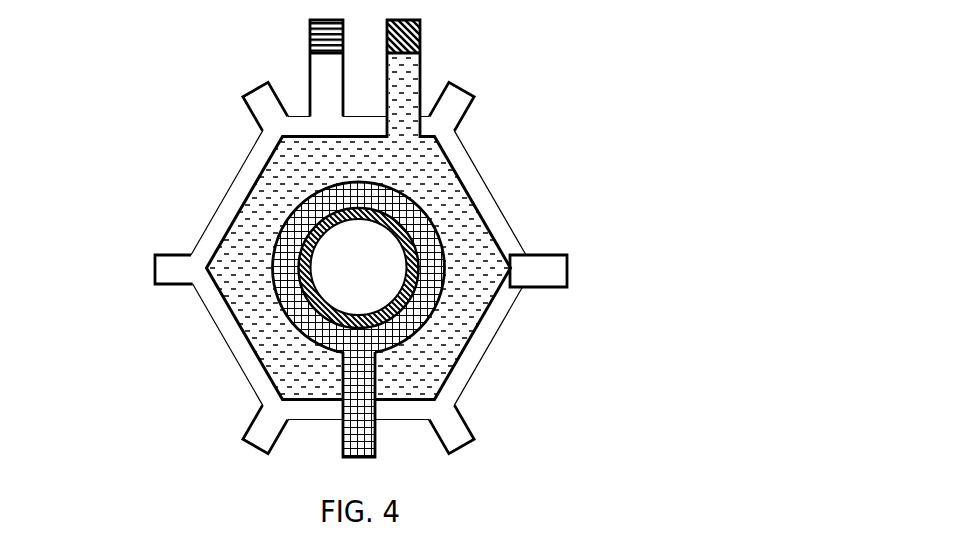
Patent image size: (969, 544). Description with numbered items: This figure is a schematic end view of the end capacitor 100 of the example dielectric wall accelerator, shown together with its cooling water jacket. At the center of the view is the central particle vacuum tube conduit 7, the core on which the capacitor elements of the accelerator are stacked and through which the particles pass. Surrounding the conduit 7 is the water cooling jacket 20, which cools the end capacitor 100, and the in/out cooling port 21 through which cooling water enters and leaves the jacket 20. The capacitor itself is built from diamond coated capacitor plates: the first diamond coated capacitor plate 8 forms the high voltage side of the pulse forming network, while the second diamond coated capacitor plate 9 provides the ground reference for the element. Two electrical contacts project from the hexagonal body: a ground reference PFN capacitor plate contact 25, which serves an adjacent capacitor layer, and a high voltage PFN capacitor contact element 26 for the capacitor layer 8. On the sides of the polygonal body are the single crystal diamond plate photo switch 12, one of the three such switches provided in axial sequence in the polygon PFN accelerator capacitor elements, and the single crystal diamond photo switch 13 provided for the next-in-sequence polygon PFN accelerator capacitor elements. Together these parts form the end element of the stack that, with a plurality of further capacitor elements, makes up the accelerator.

The end capacitor 100 is at (703, 63).
The second diamond coated capacitor plate 9 is at (227, 203).
The first diamond coated capacitor plate 8 is at (462, 322).
The central particle vacuum tube conduit 7 is at (413, 242).
The water cooling jacket 20 is at (377, 336).
The in/out cooling port 21 is at (340, 391).
The ground reference PFN capacitor plate contact 25 is at (312, 33).
The high voltage PFN capacitor contact element 26 is at (420, 33).
The single crystal diamond plate photo switch 12 is at (543, 267).
The single crystal diamond photo switch 13 is at (167, 270).